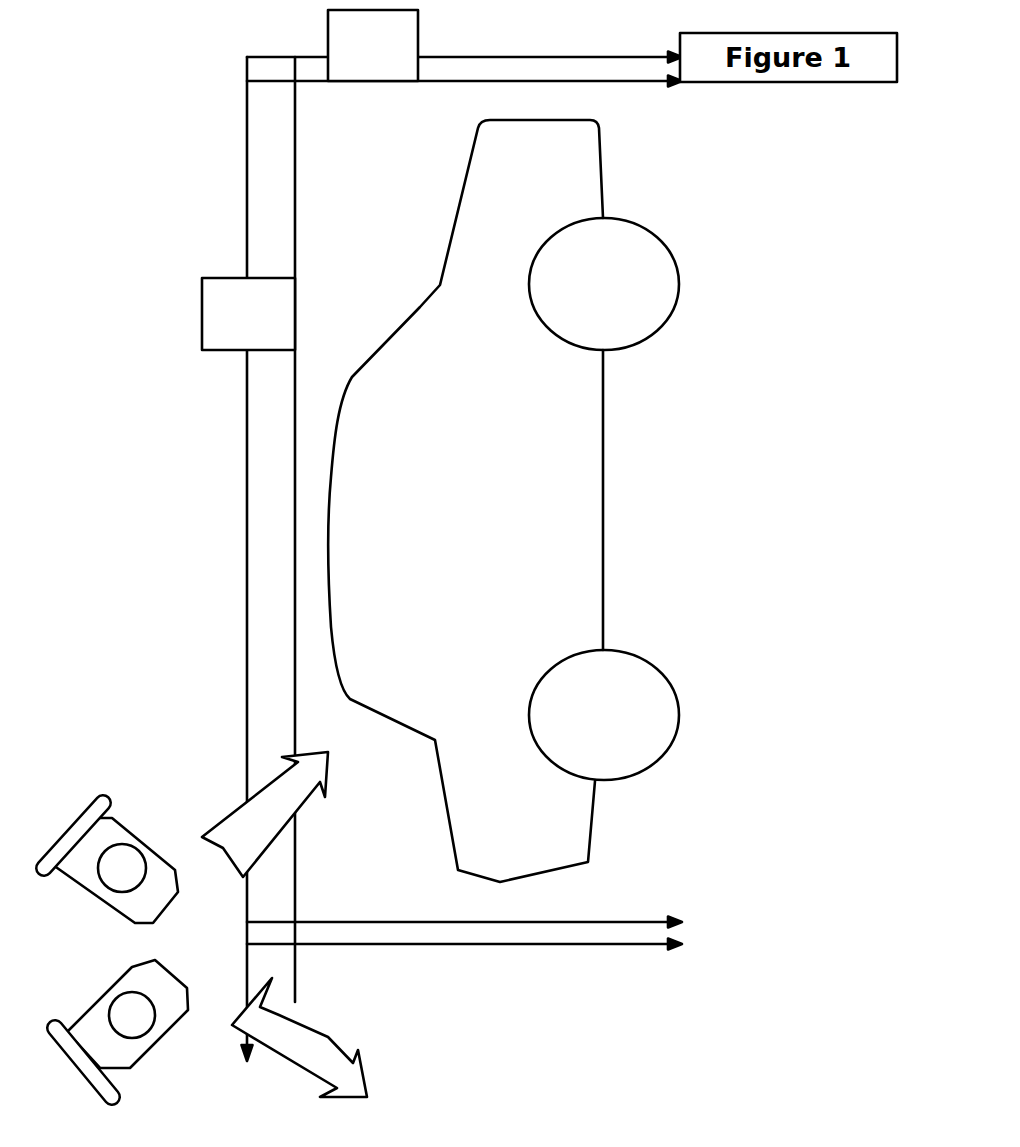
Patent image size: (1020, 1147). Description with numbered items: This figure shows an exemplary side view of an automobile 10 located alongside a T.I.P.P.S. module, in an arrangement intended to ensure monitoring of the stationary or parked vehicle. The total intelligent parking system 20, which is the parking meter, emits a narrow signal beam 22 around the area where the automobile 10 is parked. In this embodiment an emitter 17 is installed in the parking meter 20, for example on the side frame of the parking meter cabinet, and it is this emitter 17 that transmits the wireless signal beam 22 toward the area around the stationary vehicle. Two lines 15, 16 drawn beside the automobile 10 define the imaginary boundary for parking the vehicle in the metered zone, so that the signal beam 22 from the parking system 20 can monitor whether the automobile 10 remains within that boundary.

The automobile 10 is at (503, 501).
The line 15 is at (248, 314).
The line 16 is at (373, 45).
The emitter 17 is at (111, 836).
The total intelligent parking system 20 is at (121, 1012).
The signal beam 22 is at (287, 924).